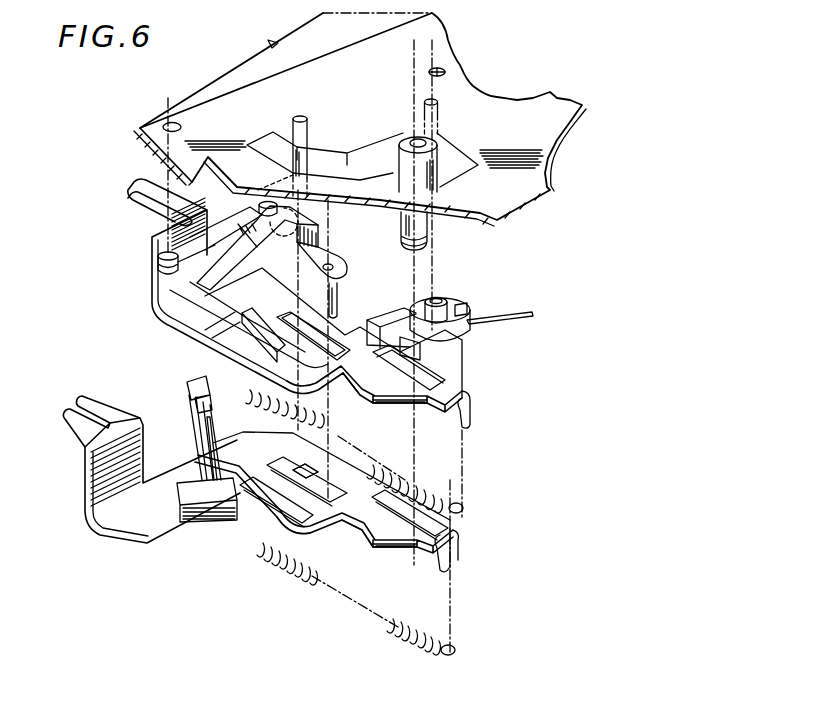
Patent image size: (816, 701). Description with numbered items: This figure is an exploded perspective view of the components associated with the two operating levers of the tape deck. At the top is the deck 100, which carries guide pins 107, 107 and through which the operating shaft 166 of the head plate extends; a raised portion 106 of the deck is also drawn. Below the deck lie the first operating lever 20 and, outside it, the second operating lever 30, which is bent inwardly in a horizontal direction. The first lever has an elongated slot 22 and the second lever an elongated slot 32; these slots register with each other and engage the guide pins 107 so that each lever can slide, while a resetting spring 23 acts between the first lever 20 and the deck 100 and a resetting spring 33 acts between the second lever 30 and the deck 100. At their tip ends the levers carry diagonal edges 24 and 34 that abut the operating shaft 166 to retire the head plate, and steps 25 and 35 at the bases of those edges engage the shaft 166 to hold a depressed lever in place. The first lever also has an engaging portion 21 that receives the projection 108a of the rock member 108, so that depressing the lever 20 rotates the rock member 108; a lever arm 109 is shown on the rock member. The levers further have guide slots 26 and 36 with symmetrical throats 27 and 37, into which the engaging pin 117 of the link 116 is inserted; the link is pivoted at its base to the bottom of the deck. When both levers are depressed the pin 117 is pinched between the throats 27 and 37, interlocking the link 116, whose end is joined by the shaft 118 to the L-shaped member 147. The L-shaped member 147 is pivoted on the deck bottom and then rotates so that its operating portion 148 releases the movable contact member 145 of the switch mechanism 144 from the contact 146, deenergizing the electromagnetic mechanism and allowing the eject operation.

The deck 100 is at (219, 90).
The raised rib 106 is at (370, 176).
The guide pin 107 is at (307, 165).
The shaft 118 is at (269, 198).
The link 116 is at (324, 252).
The engaging pin 117 is at (336, 296).
The L-shaped member 147 is at (226, 233).
The operating shaft 166 is at (423, 230).
The first operating lever 20 is at (153, 213).
The operating portion 148 is at (247, 334).
The elongated slot 22 is at (300, 366).
The throat 27 is at (267, 313).
The guide slot 26 is at (310, 326).
The step 25 is at (361, 394).
The diagonal edge 24 is at (396, 406).
The engaging portion 21 is at (428, 360).
The projection 108a is at (394, 310).
The rock member 108 is at (459, 335).
The lever 109 is at (497, 313).
The second operating lever 30 is at (170, 455).
The movable contact member 145 is at (192, 412).
The contact 146 is at (212, 425).
The switch mechanism 144 is at (205, 507).
The elongated slot 32 is at (262, 505).
The throat 37 is at (293, 468).
The guide slot 36 is at (318, 515).
The step 35 is at (353, 535).
The diagonal edge 34 is at (393, 548).
The resetting spring 23 is at (326, 420).
The resetting spring 33 is at (290, 566).